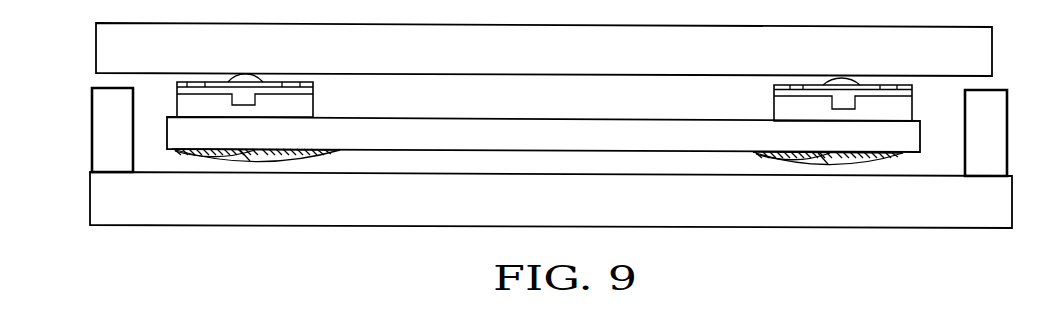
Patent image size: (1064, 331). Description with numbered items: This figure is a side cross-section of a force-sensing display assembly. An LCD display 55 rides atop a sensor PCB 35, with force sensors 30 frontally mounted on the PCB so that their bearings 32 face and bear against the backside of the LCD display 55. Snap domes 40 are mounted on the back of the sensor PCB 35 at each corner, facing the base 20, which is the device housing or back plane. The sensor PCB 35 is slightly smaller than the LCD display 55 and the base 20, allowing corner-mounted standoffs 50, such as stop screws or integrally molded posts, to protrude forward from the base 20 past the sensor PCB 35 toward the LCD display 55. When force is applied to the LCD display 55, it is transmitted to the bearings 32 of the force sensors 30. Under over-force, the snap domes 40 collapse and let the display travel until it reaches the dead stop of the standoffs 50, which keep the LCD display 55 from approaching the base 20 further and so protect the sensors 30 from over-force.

The base 20 is at (541, 214).
The force sensor 30 is at (313, 102).
The bearing 32 is at (502, 91).
The sensor PCB 35 is at (558, 144).
The snap dome 40 is at (317, 155).
The corner-mounted standoff 50 is at (92, 97).
The LCD display 55 is at (542, 56).